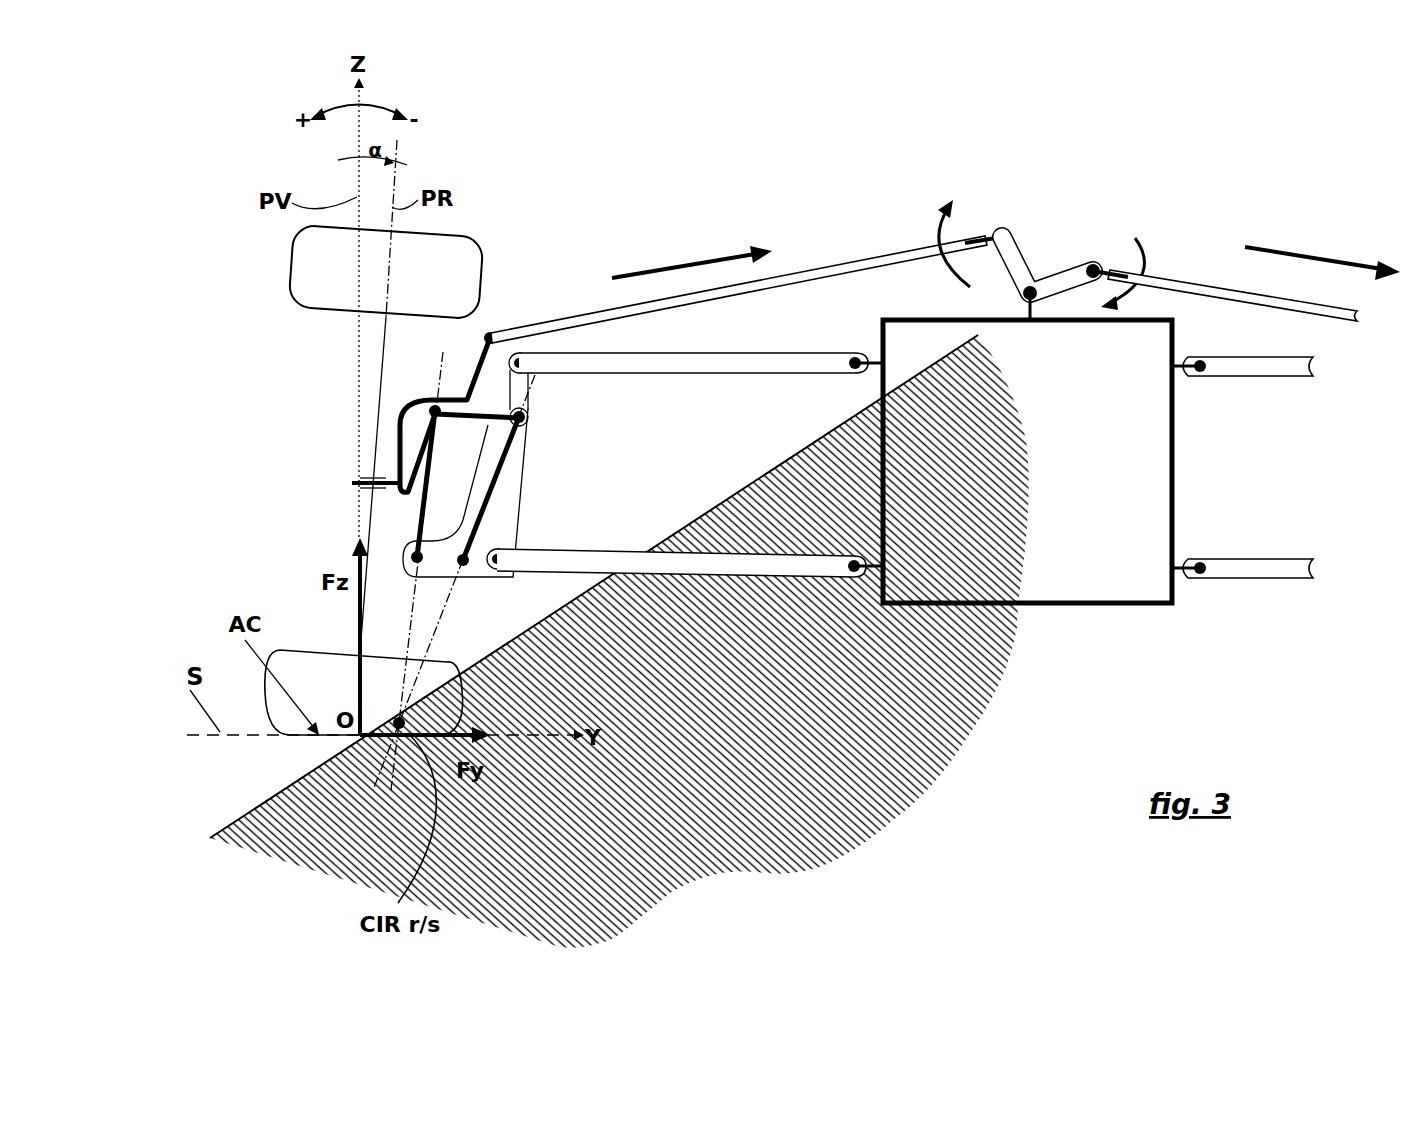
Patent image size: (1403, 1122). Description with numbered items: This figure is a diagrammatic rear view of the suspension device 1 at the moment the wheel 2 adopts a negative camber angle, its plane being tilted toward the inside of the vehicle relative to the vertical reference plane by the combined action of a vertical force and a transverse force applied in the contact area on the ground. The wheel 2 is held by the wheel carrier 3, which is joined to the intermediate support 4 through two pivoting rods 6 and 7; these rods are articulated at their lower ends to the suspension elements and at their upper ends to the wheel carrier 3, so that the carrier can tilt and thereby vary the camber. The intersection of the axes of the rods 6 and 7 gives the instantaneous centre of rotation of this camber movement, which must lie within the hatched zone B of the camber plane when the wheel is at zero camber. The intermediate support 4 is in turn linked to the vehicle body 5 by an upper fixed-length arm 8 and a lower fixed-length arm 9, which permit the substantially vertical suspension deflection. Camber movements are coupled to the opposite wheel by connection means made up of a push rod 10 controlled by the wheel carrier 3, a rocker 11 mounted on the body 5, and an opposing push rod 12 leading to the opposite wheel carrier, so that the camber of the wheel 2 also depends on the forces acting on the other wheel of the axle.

The suspension device 1 is at (790, 138).
The wheel 2 is at (378, 363).
The wheel carrier 3 is at (410, 435).
The intermediate support 4 is at (503, 513).
The body 5 is at (1135, 465).
The pivoting rod 6 is at (428, 498).
The pivoting rod 7 is at (503, 468).
The upper fixed-length arm 8 is at (645, 360).
The lower fixed-length arm 9 is at (583, 556).
The push rod 10 is at (855, 265).
The rocker 11 is at (1067, 278).
The opposing push rod 12 is at (1218, 285).
The zone B is at (863, 682).